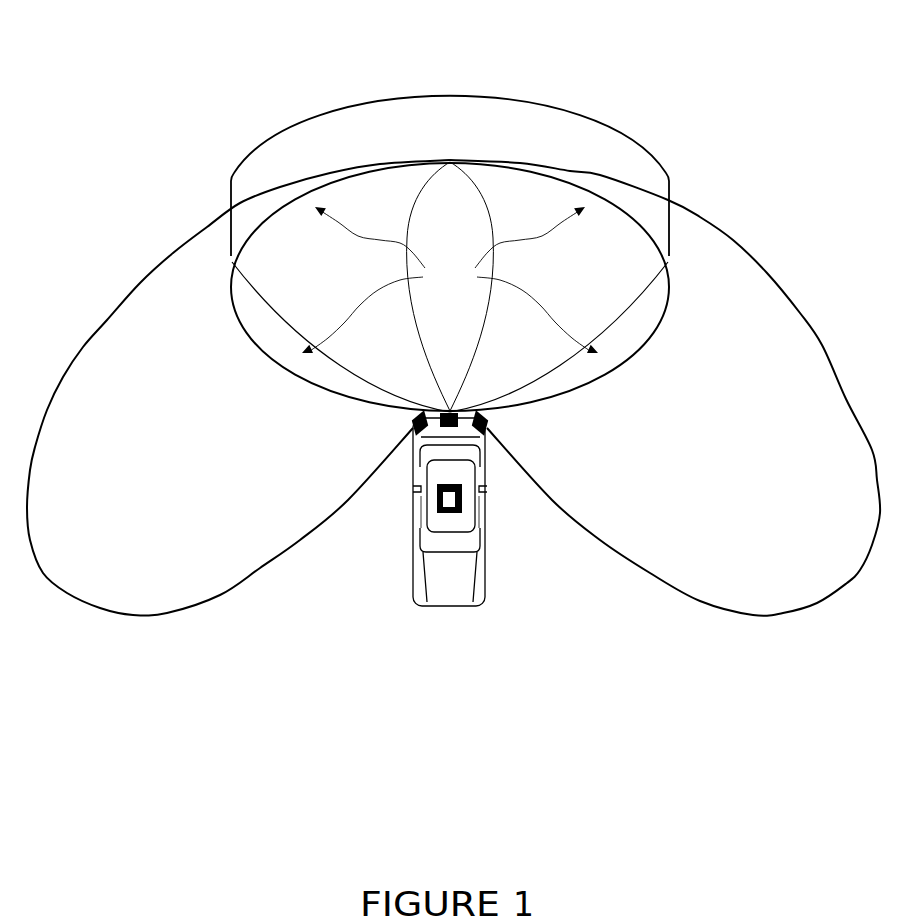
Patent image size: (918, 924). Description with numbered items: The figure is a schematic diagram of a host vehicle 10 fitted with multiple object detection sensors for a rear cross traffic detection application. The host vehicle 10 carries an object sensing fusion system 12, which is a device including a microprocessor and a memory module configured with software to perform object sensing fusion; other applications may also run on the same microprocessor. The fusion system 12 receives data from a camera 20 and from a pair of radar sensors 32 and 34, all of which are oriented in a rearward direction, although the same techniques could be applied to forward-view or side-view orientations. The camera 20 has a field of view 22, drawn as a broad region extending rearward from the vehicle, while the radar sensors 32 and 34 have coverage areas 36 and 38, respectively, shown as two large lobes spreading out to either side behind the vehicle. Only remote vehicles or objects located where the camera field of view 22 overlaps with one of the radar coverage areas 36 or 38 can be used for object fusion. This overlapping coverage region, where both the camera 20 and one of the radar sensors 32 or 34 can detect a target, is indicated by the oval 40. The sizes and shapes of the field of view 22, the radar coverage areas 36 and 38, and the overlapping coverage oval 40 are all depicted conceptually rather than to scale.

The host vehicle 10 is at (413, 563).
The object sensing fusion system 12 is at (462, 504).
The camera 20 is at (450, 426).
The field of view 22 is at (537, 107).
The radar sensor 32 is at (486, 420).
The radar sensor 34 is at (414, 420).
The coverage area 36 is at (822, 345).
The coverage area 38 is at (84, 346).
The oval 40 is at (463, 283).